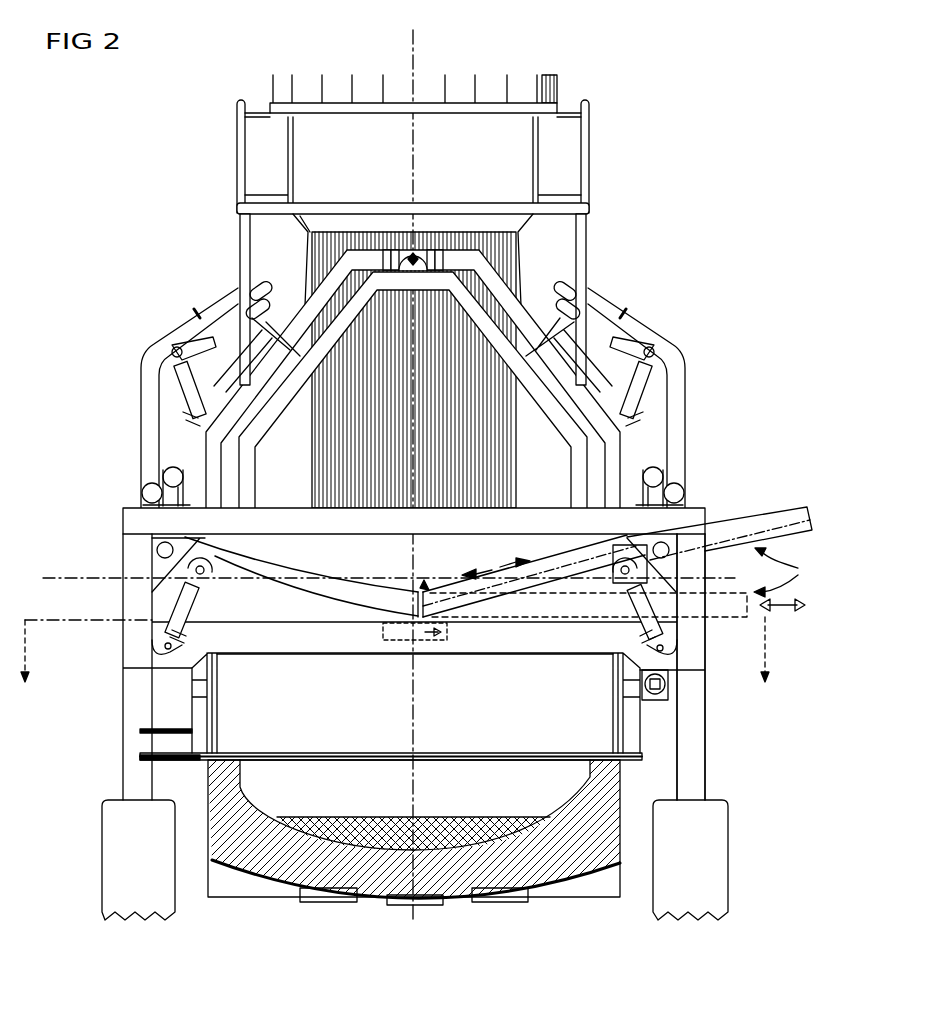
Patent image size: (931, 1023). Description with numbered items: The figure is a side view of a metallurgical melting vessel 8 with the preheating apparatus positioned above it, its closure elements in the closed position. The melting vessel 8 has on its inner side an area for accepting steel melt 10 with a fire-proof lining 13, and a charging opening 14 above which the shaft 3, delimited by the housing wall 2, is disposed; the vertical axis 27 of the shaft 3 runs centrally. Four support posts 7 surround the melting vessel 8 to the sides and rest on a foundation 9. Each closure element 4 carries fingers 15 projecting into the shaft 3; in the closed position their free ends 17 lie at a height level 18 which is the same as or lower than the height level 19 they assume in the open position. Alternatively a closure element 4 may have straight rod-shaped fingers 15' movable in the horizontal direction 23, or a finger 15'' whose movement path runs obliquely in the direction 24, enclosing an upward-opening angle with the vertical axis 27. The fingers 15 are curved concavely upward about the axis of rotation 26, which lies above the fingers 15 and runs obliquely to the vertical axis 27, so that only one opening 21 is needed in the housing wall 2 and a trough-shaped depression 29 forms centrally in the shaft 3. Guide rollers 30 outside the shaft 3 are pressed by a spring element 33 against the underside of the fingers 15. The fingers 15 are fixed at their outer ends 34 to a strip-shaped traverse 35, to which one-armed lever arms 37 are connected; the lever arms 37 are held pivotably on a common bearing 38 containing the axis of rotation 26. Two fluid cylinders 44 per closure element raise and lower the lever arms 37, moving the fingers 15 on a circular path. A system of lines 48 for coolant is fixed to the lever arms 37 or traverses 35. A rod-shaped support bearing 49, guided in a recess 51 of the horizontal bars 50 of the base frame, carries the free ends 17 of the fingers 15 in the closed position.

The housing wall 2 is at (553, 478).
The shaft 3 is at (512, 553).
The closure element 4 is at (784, 572).
The support posts 7 is at (706, 725).
The metallurgical melting vessel 8 is at (246, 896).
The foundation 9 is at (720, 860).
The steel melt 10 is at (480, 843).
The fire-proof lining 13 is at (583, 863).
The charging opening 14 is at (297, 655).
The fingers 15 is at (534, 617).
The fingers in the form of rods or bars 15' is at (594, 635).
The finger with oblique movement path 15'' is at (719, 512).
The free ends of the fingers 17 is at (405, 612).
The height level in the closed position 18 is at (54, 624).
The height level in the open position 19 is at (58, 578).
The opening 21 is at (255, 598).
The horizontal direction 23 is at (782, 612).
The oblique direction 24 is at (490, 565).
The axis of rotation 26 is at (391, 235).
The vertical axis of the shaft 27 is at (417, 37).
The trough-shaped depression 29 is at (424, 582).
The guide rollers 30 is at (615, 597).
The spring element 33 is at (660, 598).
The outer ends of the fingers 34 is at (156, 552).
The strip-shaped traverse 35 is at (142, 492).
The lever arm 37 is at (311, 290).
The bearing 38 is at (428, 262).
The fluid cylinders 44 is at (192, 396).
The system of lines 48 is at (196, 312).
The support bearing 49 is at (424, 640).
The horizontal bars 50 is at (490, 655).
The recess 51 is at (380, 637).